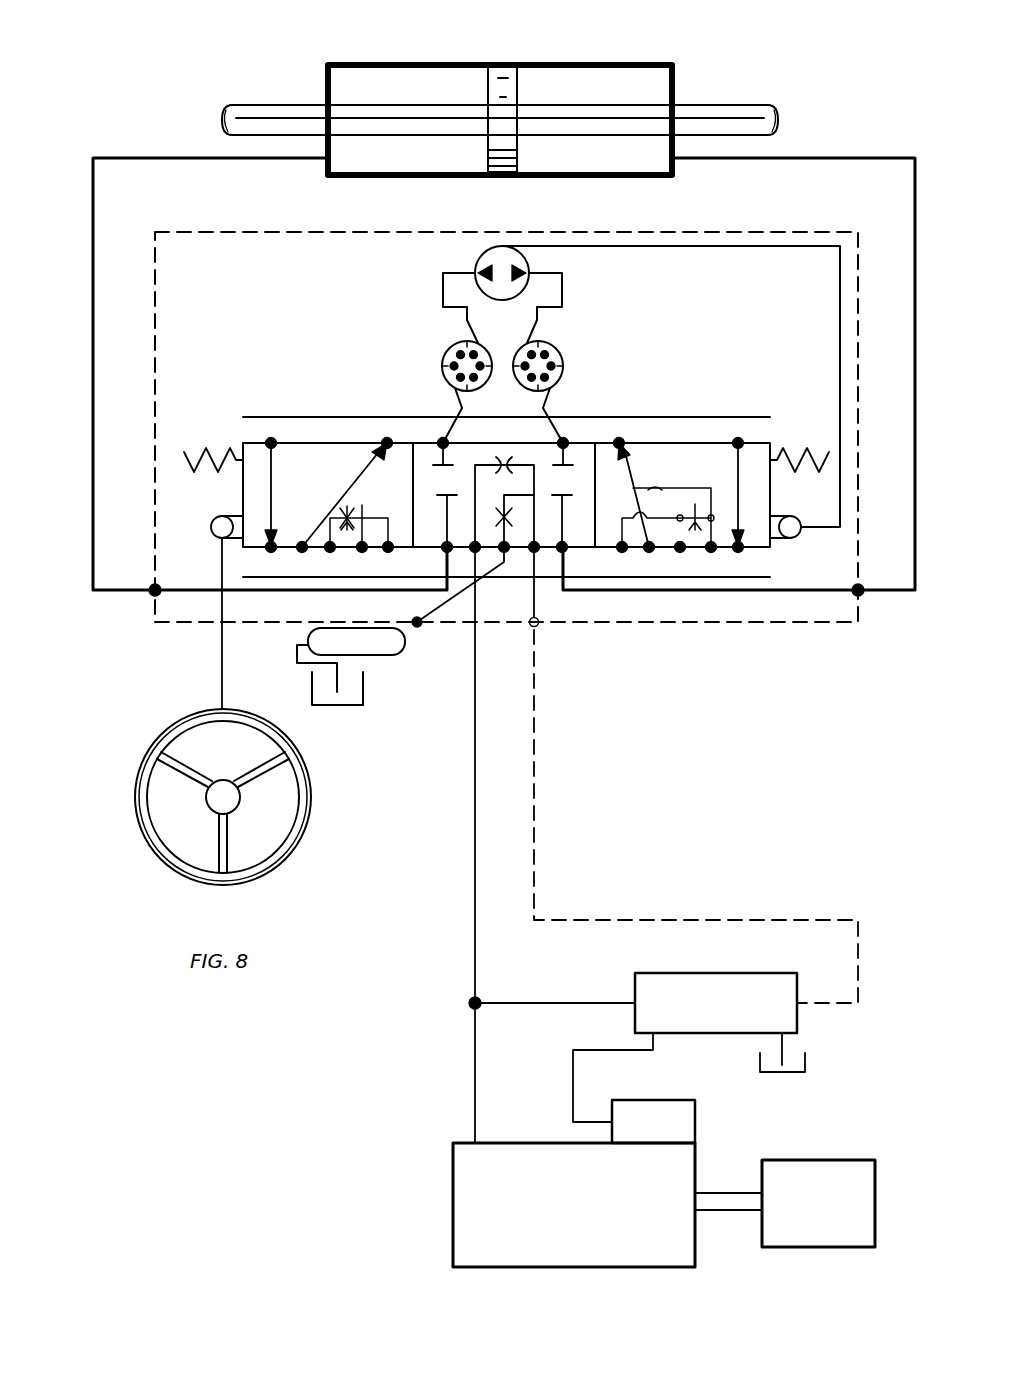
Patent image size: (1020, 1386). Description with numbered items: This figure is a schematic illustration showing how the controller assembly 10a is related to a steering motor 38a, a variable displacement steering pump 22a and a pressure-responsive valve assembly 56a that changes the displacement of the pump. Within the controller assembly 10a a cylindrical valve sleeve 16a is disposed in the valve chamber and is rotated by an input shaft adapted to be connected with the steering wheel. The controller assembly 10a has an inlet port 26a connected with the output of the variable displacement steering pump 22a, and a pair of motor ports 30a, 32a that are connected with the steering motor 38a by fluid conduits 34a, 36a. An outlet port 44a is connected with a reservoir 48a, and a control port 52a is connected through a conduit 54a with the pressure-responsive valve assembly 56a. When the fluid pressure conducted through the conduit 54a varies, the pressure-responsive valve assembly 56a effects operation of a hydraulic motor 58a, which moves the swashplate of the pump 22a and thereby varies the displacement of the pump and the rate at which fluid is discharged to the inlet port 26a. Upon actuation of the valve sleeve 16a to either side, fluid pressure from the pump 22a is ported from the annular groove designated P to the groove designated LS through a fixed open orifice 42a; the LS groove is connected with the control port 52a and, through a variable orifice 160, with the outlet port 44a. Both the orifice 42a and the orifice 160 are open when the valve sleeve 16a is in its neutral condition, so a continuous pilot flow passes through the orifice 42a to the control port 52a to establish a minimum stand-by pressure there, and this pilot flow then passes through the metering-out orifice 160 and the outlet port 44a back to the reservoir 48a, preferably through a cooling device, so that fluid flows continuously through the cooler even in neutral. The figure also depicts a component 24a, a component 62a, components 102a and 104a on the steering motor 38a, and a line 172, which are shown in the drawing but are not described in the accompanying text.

The controller assembly 10a is at (828, 232).
The valve sleeve 16a is at (757, 486).
The variable displacement steering pump 22a is at (453, 1195).
The transmission 24a is at (812, 1247).
The inlet port 26a is at (477, 625).
The motor port 30a is at (153, 587).
The motor port 32a is at (859, 587).
The fluid conduit 34a is at (93, 312).
The fluid conduit 36a is at (915, 343).
The steering motor 38a is at (674, 78).
The fixed open orifice 42a is at (507, 458).
The outlet port 44a is at (417, 625).
The reservoir 48a is at (343, 706).
The control port 52a is at (537, 627).
The conduit 54a is at (538, 745).
The pressure-responsive valve assembly 56a is at (797, 1020).
The hydraulic motor 58a is at (695, 1120).
The metering motor 62a is at (596, 324).
The piston rod 102a is at (512, 62).
The piston 104a is at (486, 62).
The variable orifice 160 is at (500, 517).
The control line 172 is at (563, 1003).